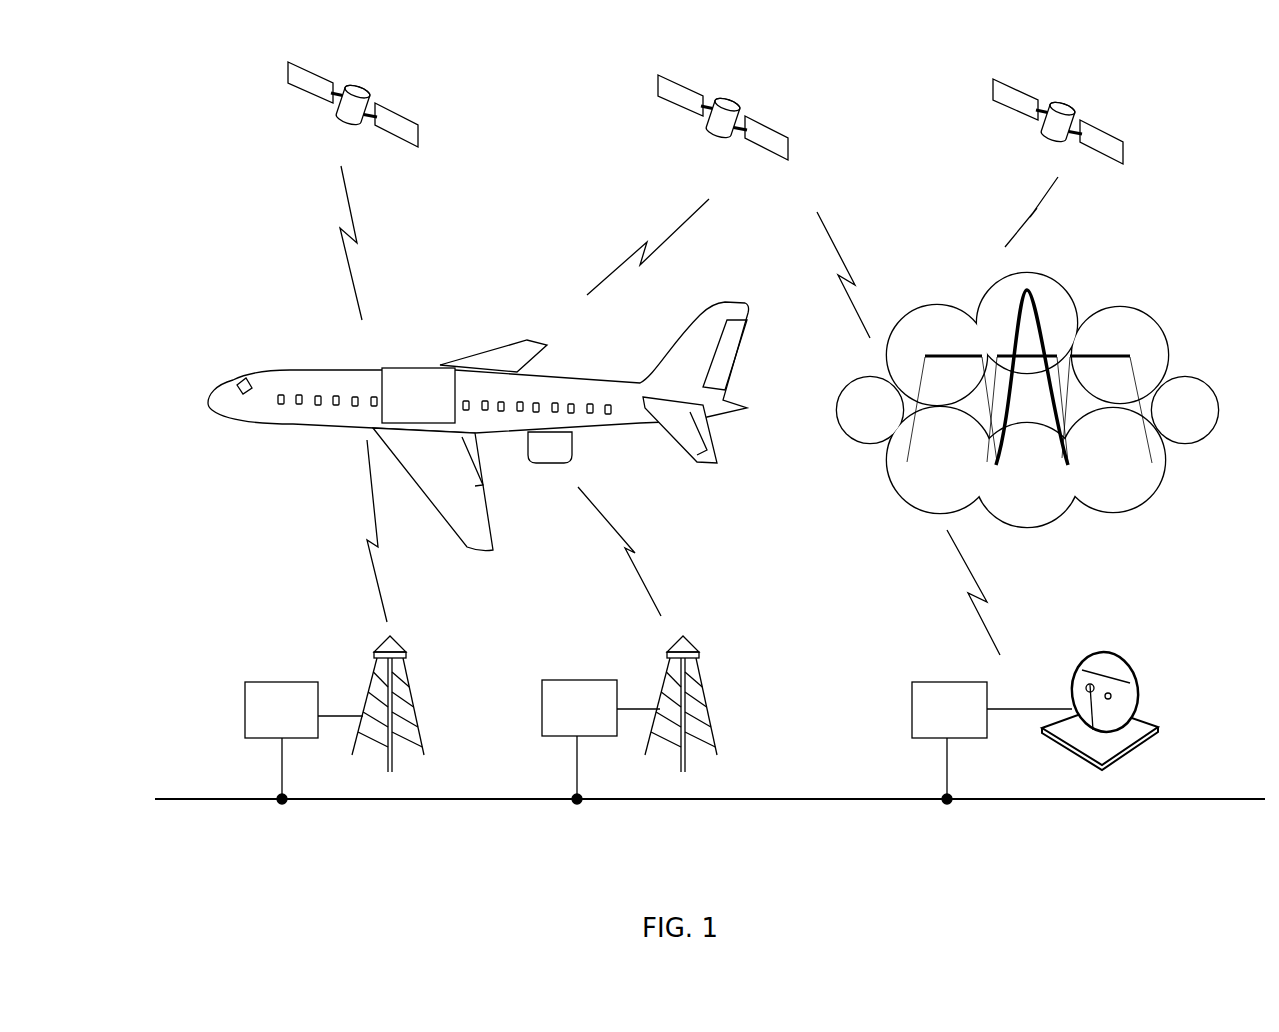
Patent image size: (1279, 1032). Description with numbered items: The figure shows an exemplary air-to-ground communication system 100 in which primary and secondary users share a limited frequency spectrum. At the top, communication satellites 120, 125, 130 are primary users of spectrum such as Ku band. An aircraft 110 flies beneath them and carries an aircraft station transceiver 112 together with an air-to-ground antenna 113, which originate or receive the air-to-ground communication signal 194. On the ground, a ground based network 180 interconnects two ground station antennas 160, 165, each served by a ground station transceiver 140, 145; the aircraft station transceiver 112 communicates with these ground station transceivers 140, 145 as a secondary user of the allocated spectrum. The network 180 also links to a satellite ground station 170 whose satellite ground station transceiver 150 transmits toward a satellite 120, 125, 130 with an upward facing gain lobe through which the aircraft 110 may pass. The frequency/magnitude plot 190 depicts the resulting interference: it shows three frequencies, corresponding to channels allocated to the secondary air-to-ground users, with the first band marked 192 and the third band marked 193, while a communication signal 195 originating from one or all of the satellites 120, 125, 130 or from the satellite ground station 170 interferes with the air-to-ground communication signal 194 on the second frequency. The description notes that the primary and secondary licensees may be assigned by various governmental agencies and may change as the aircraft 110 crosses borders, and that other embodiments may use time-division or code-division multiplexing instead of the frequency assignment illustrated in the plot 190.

The communication system 100 is at (710, 408).
The aircraft 110 is at (475, 426).
The aircraft station transceiver 112 is at (382, 417).
The air-to-ground antenna 113 is at (573, 447).
The communication satellite 120 is at (373, 92).
The communication satellite 125 is at (742, 108).
The communication satellite 130 is at (1078, 113).
The ground station transceiver 140 is at (262, 680).
The ground station transceiver 145 is at (565, 678).
The satellite ground station transceiver 150 is at (925, 680).
The ground station antenna 160 is at (407, 687).
The ground station antenna 165 is at (700, 687).
The satellite ground station 170 is at (1145, 675).
The ground based network 180 is at (1175, 797).
The frequency/magnitude plot 190 is at (1050, 398).
The first frequency band F1 192 is at (948, 352).
The third frequency band F3 193 is at (1110, 347).
The air-to-ground communication signal 194 is at (1047, 345).
The communication signal 195 is at (1035, 307).